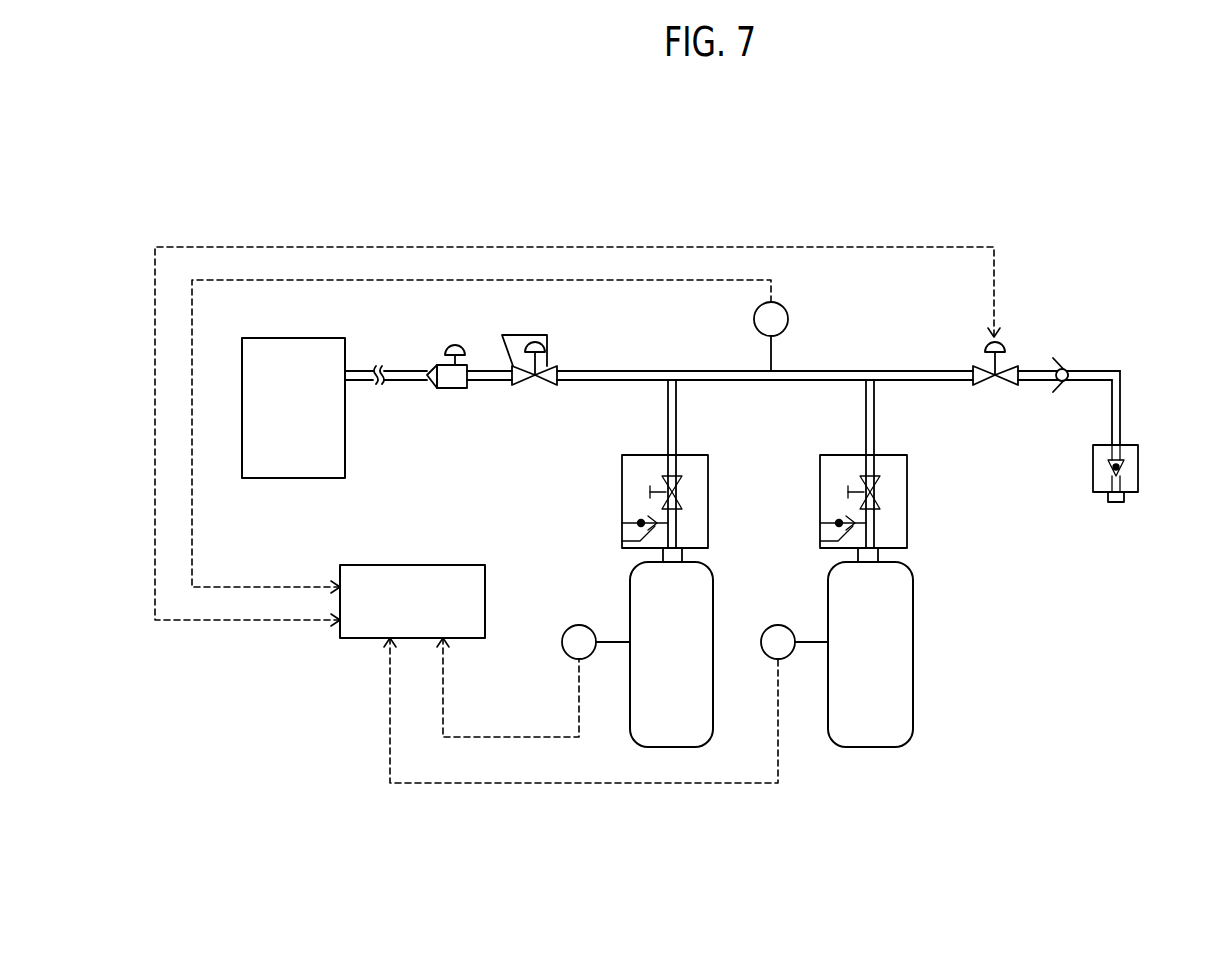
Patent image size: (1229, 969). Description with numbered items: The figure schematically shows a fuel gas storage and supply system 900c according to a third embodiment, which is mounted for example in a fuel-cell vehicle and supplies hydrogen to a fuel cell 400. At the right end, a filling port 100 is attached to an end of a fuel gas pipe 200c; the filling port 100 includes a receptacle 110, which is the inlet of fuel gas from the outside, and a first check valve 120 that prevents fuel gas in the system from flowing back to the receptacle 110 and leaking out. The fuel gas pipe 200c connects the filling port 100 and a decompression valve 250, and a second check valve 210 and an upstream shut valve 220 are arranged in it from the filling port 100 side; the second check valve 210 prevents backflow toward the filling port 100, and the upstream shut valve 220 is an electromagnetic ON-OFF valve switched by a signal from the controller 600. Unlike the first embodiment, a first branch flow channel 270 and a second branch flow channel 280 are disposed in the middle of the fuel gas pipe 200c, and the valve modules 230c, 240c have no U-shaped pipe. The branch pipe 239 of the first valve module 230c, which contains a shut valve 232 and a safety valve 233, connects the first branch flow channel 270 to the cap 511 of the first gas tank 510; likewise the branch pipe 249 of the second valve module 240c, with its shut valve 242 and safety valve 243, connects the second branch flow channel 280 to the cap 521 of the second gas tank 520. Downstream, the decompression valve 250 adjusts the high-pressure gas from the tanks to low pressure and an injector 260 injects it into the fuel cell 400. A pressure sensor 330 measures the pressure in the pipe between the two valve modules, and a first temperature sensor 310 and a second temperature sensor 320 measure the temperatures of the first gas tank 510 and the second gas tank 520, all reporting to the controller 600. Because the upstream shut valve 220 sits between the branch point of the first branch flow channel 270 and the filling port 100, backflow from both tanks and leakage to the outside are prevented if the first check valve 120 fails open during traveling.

The filling port 100 is at (1118, 505).
The receptacle 110 is at (1115, 502).
The first check valve 120 is at (1100, 467).
The fuel gas pipe 200c is at (921, 371).
The second check valve 210 is at (1057, 358).
The upstream shut valve 220 is at (997, 387).
The first valve module 230c is at (828, 486).
The shut valve 232 is at (823, 483).
The safety valve 233 is at (825, 518).
The branch pipe 239 is at (820, 543).
The second valve module 240c is at (630, 486).
The shut valve 242 is at (625, 483).
The safety valve 243 is at (627, 518).
The branch pipe 249 is at (622, 543).
The decompression valve 250 is at (538, 343).
The injector 260 is at (457, 344).
The first branch flow channel 270 is at (875, 402).
The second branch flow channel 280 is at (677, 402).
The first temperature sensor 310 is at (778, 662).
The second temperature sensor 320 is at (579, 662).
The pressure sensor 330 is at (789, 318).
The fuel cell 400 is at (286, 338).
The first gas tank 510 is at (913, 618).
The cap 511 is at (880, 553).
The second gas tank 520 is at (713, 618).
The cap 521 is at (658, 555).
The controller 600 is at (400, 565).
The fuel gas storage and supply system 900c is at (1078, 224).